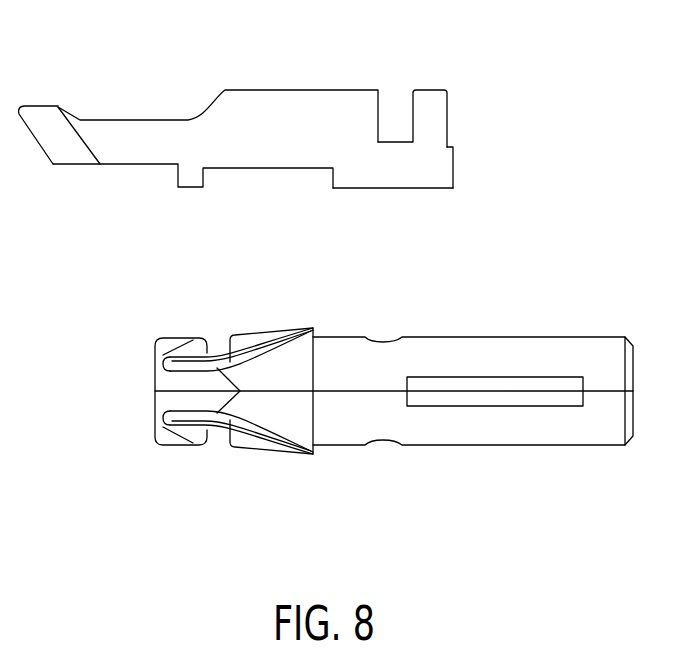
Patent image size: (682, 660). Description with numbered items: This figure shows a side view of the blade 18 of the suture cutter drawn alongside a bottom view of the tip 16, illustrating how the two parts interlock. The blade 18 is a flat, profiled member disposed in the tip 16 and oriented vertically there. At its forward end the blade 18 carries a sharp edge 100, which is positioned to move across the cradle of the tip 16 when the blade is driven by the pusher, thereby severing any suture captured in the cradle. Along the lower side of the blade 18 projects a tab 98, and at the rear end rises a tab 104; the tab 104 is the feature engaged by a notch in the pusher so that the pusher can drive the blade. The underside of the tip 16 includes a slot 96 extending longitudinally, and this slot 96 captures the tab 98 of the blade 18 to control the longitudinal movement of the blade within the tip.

The blade 18 is at (238, 140).
The sharp edge 100 is at (50, 158).
The tab 104 is at (428, 88).
The tab 98 is at (400, 188).
The tip 16 is at (394, 398).
The slot 96 is at (518, 393).